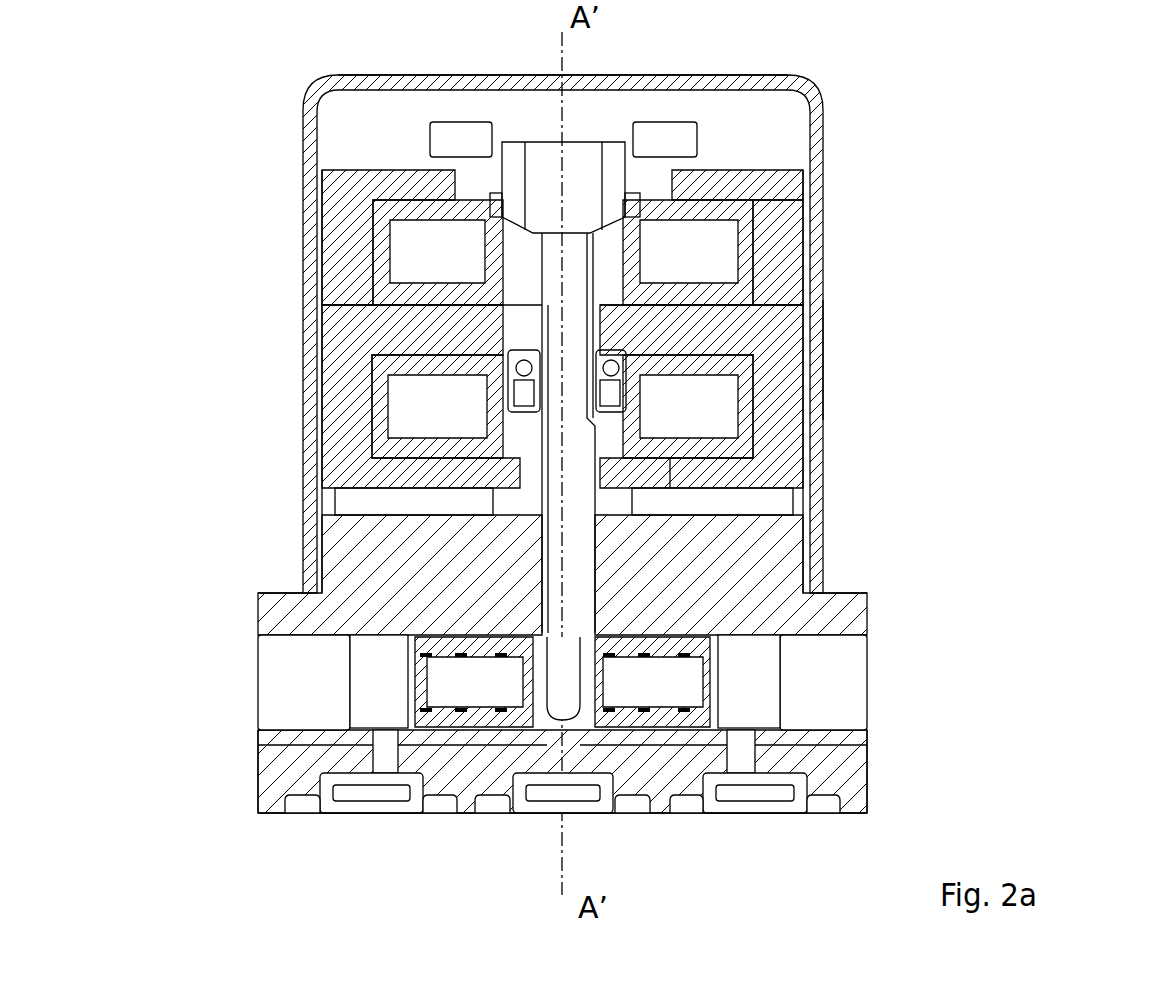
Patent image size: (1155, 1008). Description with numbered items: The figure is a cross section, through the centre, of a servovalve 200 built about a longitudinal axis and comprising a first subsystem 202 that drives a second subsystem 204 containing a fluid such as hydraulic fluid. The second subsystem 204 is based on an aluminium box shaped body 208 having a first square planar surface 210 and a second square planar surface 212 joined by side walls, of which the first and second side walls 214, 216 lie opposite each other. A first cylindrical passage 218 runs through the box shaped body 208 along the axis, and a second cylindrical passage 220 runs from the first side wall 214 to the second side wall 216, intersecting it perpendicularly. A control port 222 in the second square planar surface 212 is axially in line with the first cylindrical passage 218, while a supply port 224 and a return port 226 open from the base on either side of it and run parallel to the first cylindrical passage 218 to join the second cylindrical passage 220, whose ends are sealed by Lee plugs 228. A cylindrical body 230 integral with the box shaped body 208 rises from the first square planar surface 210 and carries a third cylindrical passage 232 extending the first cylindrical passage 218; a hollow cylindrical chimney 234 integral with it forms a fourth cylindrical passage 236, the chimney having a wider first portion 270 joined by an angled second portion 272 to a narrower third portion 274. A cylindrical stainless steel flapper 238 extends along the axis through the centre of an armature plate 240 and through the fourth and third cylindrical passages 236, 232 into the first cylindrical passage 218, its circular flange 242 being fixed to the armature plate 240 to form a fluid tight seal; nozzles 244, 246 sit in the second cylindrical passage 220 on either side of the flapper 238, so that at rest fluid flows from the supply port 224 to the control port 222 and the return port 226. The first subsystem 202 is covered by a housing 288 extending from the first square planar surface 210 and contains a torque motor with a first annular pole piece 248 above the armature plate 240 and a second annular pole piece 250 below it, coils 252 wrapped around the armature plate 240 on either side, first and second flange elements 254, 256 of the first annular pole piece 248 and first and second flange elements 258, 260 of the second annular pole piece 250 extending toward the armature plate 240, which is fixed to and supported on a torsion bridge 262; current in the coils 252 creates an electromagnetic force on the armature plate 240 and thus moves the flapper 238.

The servovalve 200 is at (978, 413).
The first subsystem 202 is at (863, 295).
The second subsystem 204 is at (945, 733).
The box shaped body 208 is at (880, 782).
The first square planar surface 210 is at (275, 592).
The second square planar surface 212 is at (275, 813).
The first side wall 214 is at (258, 782).
The second side wall 216 is at (862, 803).
The first cylindrical passage 218 is at (385, 745).
The second cylindrical passage 220 is at (368, 669).
The control port 222 is at (535, 812).
The supply port 224 is at (342, 810).
The return port 226 is at (775, 810).
The Lee plugs 228 is at (285, 640).
The cylindrical body 230 is at (797, 557).
The third cylindrical passage 232 is at (595, 543).
The hollow cylindrical chimney 234 is at (668, 468).
The fourth cylindrical passage 236 is at (612, 445).
The flapper 238 is at (540, 485).
The armature plate 240 is at (790, 343).
The circular flange 242 is at (540, 306).
The nozzle 244 is at (450, 720).
The nozzle 246 is at (655, 715).
The first annular pole piece 248 is at (730, 178).
The second annular pole piece 250 is at (600, 477).
The coils 252 is at (380, 245).
The first flange element 254 is at (365, 263).
The second flange element 256 is at (790, 265).
The first flange element 258 is at (345, 400).
The second flange element 260 is at (785, 385).
The torsion bridge 262 is at (830, 355).
The first portion 270 is at (540, 450).
The second portion 272 is at (525, 415).
The third portion 274 is at (520, 367).
The housing 288 is at (823, 163).